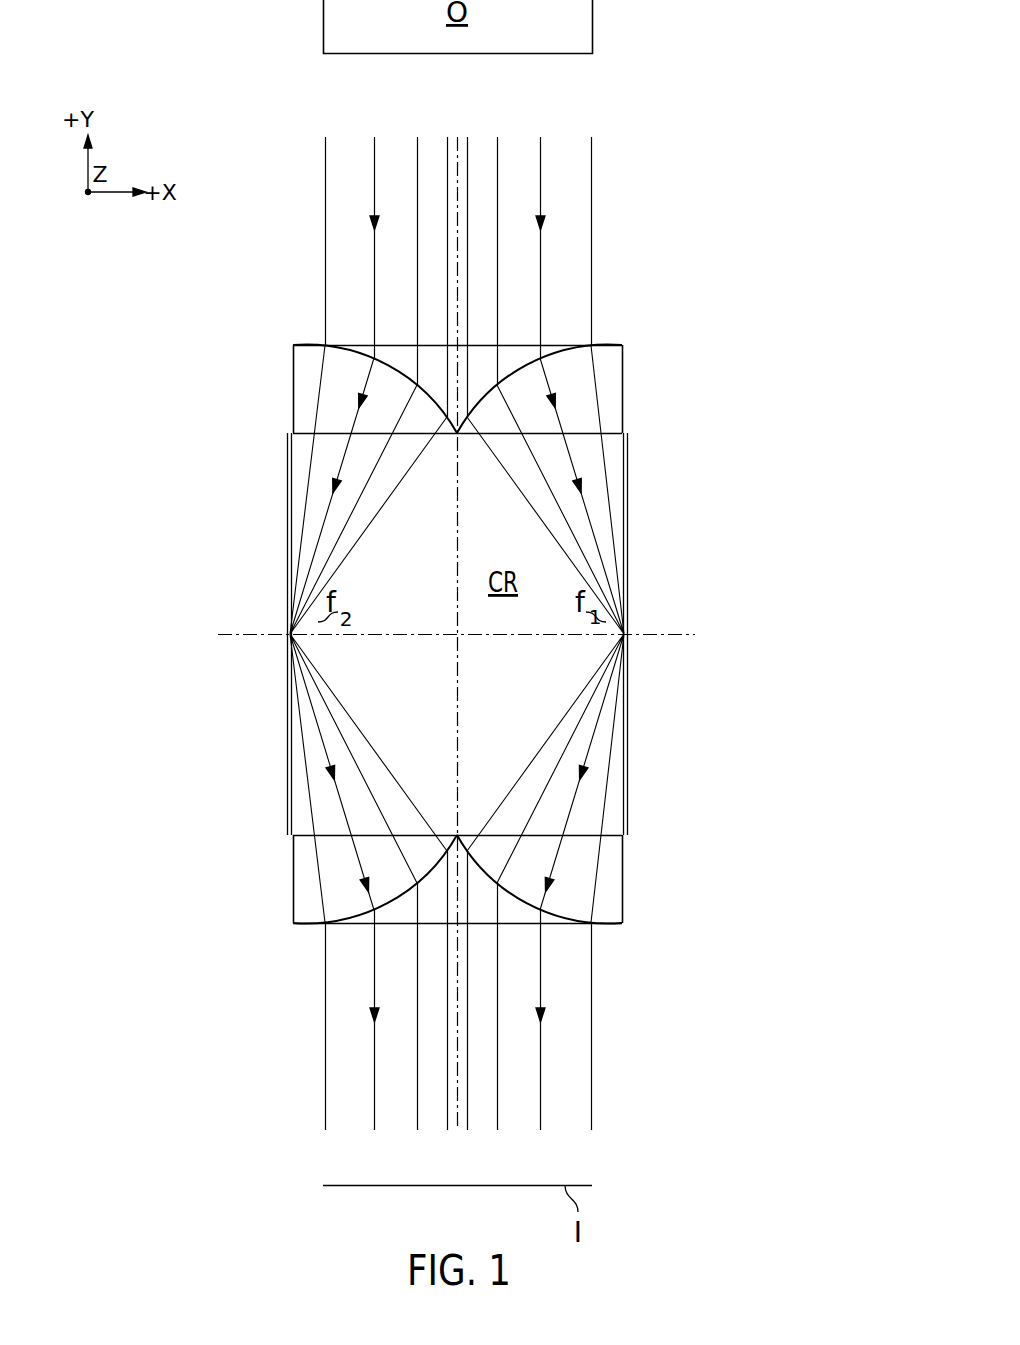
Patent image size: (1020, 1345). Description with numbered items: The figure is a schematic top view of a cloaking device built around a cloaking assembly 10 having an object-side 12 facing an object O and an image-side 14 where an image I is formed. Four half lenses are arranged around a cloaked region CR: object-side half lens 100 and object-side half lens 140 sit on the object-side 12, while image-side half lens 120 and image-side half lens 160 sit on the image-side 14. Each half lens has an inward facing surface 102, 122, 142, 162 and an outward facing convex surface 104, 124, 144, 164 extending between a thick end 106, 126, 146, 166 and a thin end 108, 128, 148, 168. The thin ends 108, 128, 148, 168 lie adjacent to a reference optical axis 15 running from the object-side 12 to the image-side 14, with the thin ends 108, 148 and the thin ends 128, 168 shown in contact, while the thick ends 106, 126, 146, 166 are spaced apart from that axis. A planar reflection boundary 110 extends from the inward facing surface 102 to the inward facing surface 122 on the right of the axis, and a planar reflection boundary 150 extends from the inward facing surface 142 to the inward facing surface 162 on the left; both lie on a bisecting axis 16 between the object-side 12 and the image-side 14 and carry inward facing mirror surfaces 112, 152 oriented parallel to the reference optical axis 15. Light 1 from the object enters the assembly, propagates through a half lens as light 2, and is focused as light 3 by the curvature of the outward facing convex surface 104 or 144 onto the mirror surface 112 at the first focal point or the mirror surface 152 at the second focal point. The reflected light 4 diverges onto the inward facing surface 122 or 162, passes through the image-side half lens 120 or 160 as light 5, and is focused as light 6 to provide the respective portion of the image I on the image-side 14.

The light from object 1 is at (375, 213).
The light propagating through object-side half lens 2 is at (362, 382).
The light focused by object-side half lens 3 is at (340, 470).
The light reflected from mirror surface 4 is at (320, 742).
The light propagating through image-side half lens 5 is at (358, 860).
The light focused by image-side half lens 6 is at (373, 1015).
The cloaking assembly 10 is at (692, 137).
The object-side 12 is at (690, 218).
The image-side 14 is at (715, 898).
The reference optical axis 15 is at (460, 143).
The bisecting axis 16 is at (683, 636).
The object-side half lens 100 is at (632, 372).
The inward facing surface 102 is at (625, 440).
The outward facing convex surface 104 is at (616, 345).
The thick end 106 is at (622, 412).
The thin end 108 is at (462, 436).
The planar reflection boundary 110 is at (626, 612).
The inward facing mirror surface 112 is at (626, 666).
The image-side half lens 120 is at (655, 920).
The inward facing surface 122 is at (625, 833).
The outward facing convex surface 124 is at (618, 923).
The thick end 126 is at (623, 856).
The thin end 128 is at (462, 832).
The object-side half lens 140 is at (287, 359).
The inward facing surface 142 is at (291, 440).
The outward facing convex surface 144 is at (300, 345).
The thick end 146 is at (293, 388).
The thin end 148 is at (452, 436).
The planar reflection boundary 150 is at (288, 610).
The inward facing mirror surface 152 is at (292, 668).
The image-side half lens 160 is at (287, 905).
The inward facing surface 162 is at (293, 833).
The outward facing convex surface 164 is at (300, 923).
The thick end 166 is at (293, 868).
The thin end 168 is at (452, 832).